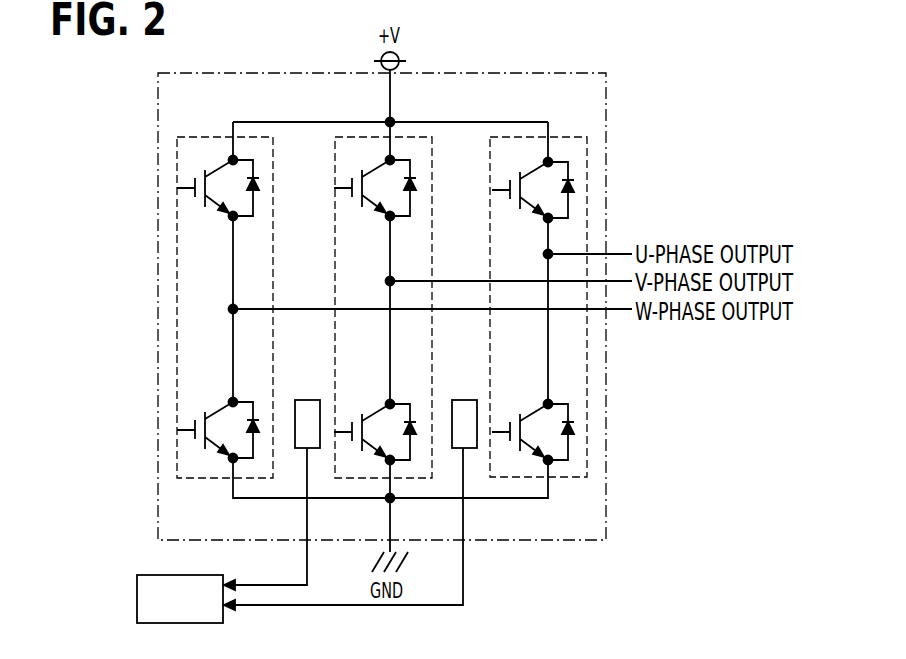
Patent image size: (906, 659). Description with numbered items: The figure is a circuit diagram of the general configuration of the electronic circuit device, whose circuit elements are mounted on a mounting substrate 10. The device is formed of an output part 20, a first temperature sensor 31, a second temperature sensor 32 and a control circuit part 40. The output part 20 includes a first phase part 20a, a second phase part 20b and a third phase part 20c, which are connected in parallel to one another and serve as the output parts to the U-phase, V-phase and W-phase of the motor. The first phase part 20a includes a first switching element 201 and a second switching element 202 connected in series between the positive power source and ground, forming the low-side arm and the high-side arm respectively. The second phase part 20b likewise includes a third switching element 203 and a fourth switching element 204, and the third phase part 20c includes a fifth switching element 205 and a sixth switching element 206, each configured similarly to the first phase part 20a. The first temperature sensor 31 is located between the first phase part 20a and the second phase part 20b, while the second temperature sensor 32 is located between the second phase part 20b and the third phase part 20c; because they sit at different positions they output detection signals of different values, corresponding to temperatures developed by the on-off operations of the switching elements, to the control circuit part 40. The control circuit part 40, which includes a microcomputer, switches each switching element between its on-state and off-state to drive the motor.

The mounting substrate 10 is at (601, 4).
The output part 20 is at (574, 540).
The first phase part 20a is at (222, 137).
The second phase part 20b is at (420, 137).
The third phase part 20c is at (585, 137).
The first switching element 201 is at (214, 444).
The second switching element 202 is at (223, 164).
The third switching element 203 is at (371, 446).
The fourth switching element 204 is at (380, 164).
The fifth switching element 205 is at (529, 446).
The sixth switching element 206 is at (540, 166).
The first temperature sensor 31 is at (307, 400).
The second temperature sensor 32 is at (463, 400).
The control circuit part 40 is at (221, 626).